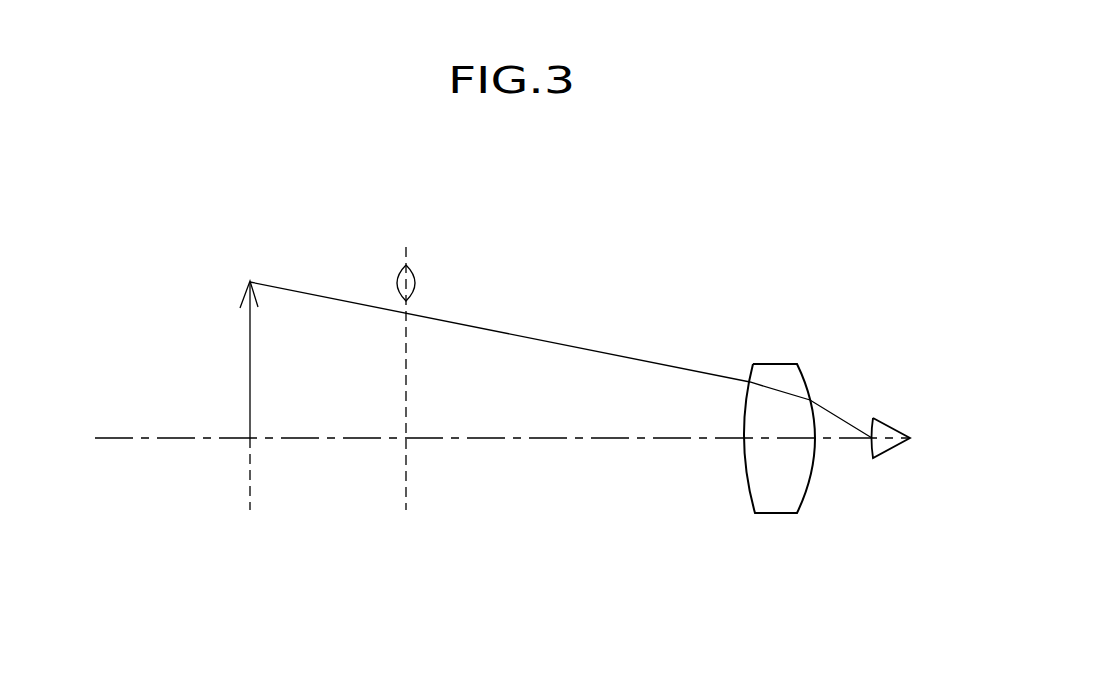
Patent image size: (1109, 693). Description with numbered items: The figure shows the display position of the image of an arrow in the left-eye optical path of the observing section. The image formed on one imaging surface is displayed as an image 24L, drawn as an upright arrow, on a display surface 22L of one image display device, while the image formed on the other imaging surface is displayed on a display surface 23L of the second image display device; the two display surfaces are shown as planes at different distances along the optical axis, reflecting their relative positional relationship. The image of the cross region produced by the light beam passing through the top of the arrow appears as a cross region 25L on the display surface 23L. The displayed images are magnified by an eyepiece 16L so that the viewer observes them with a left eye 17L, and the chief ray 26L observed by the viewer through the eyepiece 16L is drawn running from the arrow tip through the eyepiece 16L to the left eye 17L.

The eyepiece 16L is at (777, 363).
The left eye 17L is at (893, 420).
The display surface 22L is at (248, 475).
The display surface 23L is at (405, 483).
The image 24L is at (250, 360).
The cross region 25L is at (398, 275).
The chief ray 26L is at (567, 345).